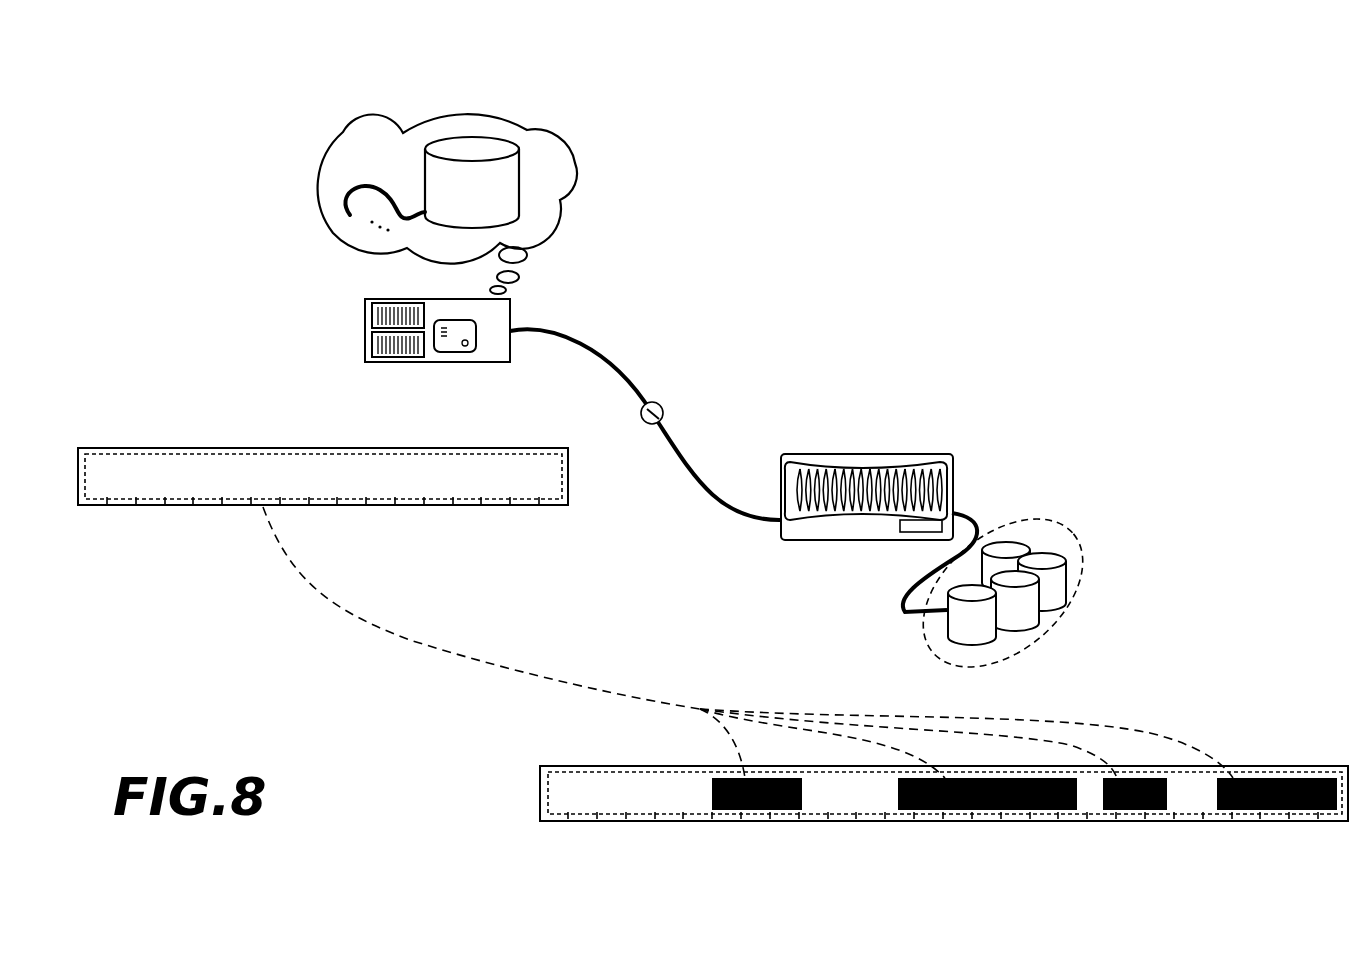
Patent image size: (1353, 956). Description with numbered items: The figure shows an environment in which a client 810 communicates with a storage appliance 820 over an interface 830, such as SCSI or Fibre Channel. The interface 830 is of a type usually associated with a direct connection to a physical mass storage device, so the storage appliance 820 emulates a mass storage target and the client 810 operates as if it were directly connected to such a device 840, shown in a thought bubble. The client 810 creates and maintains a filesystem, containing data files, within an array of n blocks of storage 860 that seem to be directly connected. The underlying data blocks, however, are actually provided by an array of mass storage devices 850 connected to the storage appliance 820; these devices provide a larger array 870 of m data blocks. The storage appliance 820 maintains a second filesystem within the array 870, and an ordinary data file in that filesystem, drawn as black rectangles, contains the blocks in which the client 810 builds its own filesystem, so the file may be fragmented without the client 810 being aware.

The client 810 is at (363, 304).
The storage appliance 820 is at (930, 453).
The interface 830 is at (658, 403).
The device 840 is at (514, 217).
The array of mass storage devices 850 is at (1083, 568).
The array of n blocks of storage 860 is at (105, 448).
The array of m data blocks 870 is at (1193, 823).